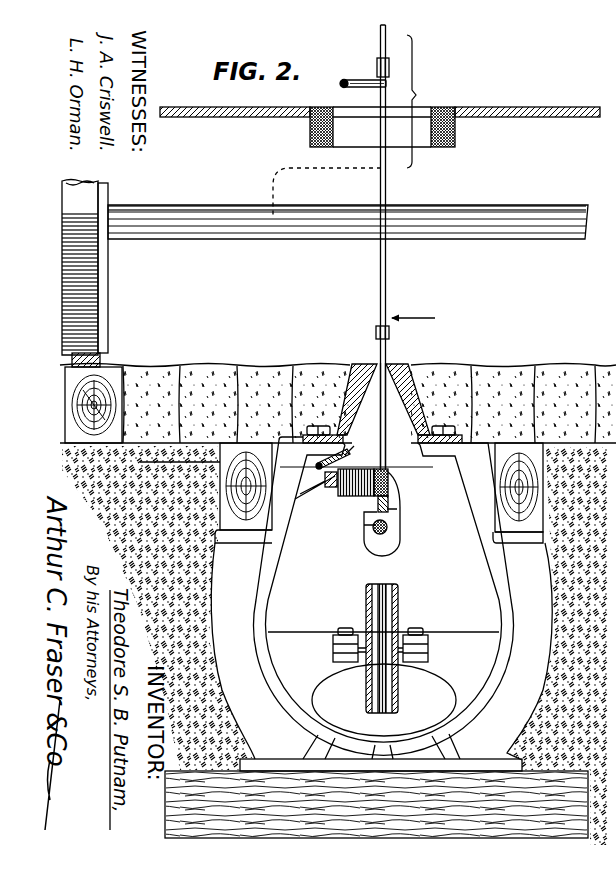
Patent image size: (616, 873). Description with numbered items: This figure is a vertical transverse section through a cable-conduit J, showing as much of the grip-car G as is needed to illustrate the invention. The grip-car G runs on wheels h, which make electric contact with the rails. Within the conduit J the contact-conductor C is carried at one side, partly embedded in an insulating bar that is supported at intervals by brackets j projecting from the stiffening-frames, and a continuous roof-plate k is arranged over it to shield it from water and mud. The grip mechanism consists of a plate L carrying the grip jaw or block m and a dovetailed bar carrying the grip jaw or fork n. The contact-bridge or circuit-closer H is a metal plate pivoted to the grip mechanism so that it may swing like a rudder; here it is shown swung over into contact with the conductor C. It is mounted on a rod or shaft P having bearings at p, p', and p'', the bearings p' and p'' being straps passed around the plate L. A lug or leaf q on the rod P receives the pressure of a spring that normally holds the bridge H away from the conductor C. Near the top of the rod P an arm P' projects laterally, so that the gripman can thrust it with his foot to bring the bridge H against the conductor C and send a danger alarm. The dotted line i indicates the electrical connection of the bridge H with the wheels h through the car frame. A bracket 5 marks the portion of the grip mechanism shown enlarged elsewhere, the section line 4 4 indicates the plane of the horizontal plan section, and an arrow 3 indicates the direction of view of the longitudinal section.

The section line 4 is at (335, 413).
The grip-car G is at (325, 264).
The lug or leaf q is at (380, 120).
The bracket 5 is at (417, 101).
The dotted line i is at (327, 191).
The plate L is at (369, 246).
The bearing p'' is at (390, 67).
The arm P' is at (363, 74).
The direction arrow 3 is at (413, 311).
The bearing p' is at (390, 338).
The conduit J is at (376, 637).
The rod or shaft P is at (391, 416).
The roof-plate k is at (338, 449).
The wheels h is at (356, 460).
The bracket j is at (321, 483).
The contact-conductor C is at (331, 489).
The contact-bridge H is at (353, 498).
The bearing p is at (397, 498).
The grip jaw or block m is at (388, 548).
The grip jaw or fork n is at (388, 526).